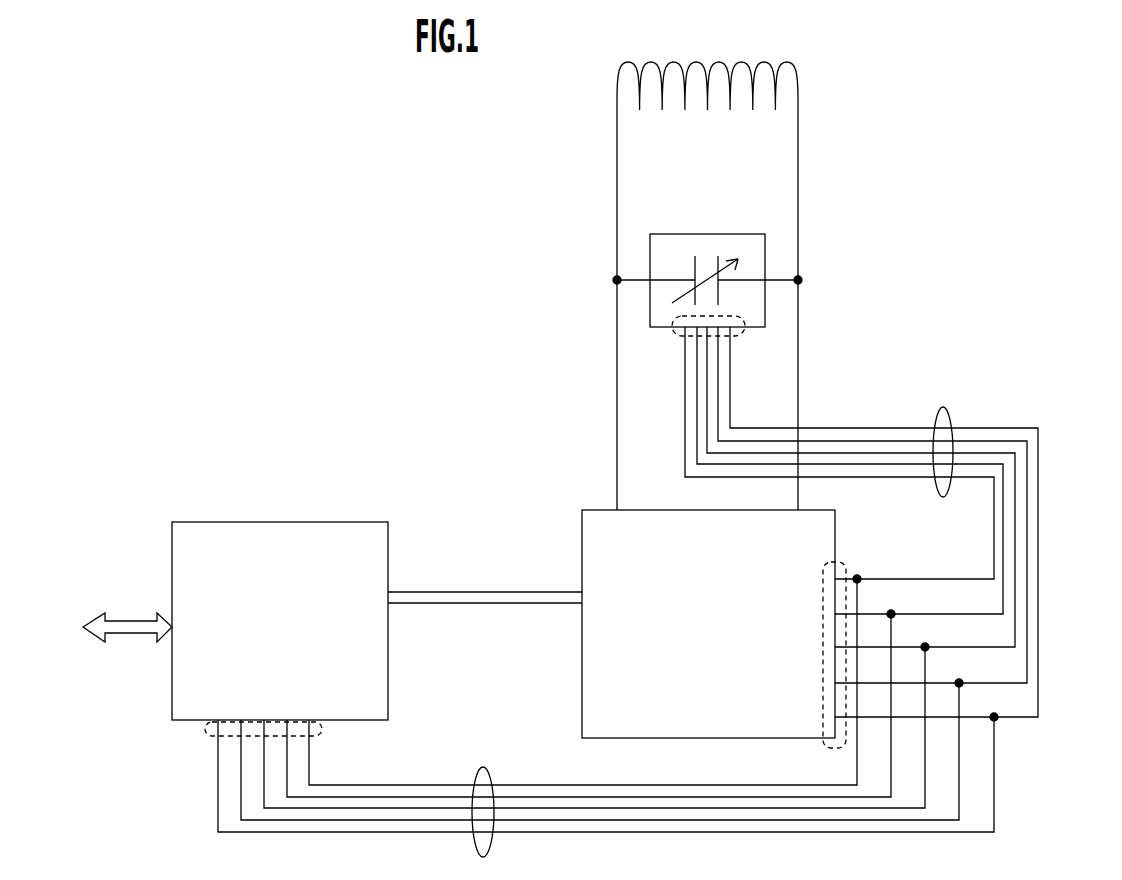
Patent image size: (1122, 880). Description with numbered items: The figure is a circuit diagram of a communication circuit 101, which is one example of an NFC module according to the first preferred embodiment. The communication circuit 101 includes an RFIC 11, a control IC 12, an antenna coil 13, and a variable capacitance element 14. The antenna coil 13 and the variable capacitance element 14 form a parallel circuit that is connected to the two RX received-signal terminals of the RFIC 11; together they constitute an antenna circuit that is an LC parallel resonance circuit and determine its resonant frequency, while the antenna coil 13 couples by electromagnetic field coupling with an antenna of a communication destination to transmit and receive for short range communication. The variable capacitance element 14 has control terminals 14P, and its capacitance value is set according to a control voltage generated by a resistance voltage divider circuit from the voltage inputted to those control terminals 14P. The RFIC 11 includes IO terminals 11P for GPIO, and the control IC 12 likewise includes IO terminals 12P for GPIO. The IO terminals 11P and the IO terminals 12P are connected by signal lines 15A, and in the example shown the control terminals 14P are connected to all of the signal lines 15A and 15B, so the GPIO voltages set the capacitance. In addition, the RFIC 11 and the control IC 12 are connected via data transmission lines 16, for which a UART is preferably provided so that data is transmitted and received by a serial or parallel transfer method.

The communication circuit 101 is at (1072, 143).
The RFIC 11 is at (835, 506).
The IO terminals 11P is at (843, 563).
The control IC 12 is at (283, 522).
The IO terminals 12P is at (208, 729).
The antenna coil 13 is at (805, 83).
The variable capacitance element 14 is at (708, 234).
The control terminals 14P is at (740, 336).
The signal lines 15A is at (485, 767).
The signal lines 15B is at (945, 407).
The data transmission lines 16 is at (482, 590).